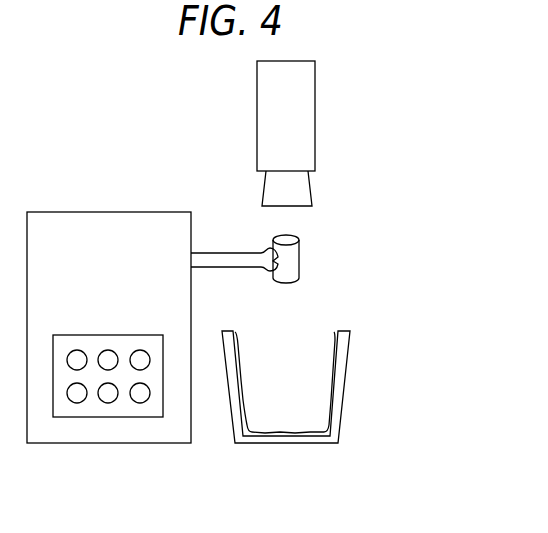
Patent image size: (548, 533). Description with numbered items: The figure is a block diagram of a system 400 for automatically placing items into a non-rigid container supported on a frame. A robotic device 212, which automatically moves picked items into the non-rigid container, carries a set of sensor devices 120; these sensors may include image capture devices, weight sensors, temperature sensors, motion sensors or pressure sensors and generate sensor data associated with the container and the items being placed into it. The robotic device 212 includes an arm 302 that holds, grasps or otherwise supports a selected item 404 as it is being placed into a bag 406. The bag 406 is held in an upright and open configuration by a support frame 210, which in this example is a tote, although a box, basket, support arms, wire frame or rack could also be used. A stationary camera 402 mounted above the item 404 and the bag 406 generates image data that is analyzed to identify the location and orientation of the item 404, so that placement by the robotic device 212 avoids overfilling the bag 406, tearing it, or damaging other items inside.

The system 400 is at (168, 123).
The robotic device 212 is at (128, 275).
The set of sensor devices 120 is at (107, 419).
The arm 302 is at (235, 251).
The item 404 is at (304, 261).
The stationary camera 402 is at (316, 128).
The support frame 210 is at (317, 446).
The bag 406 is at (334, 346).